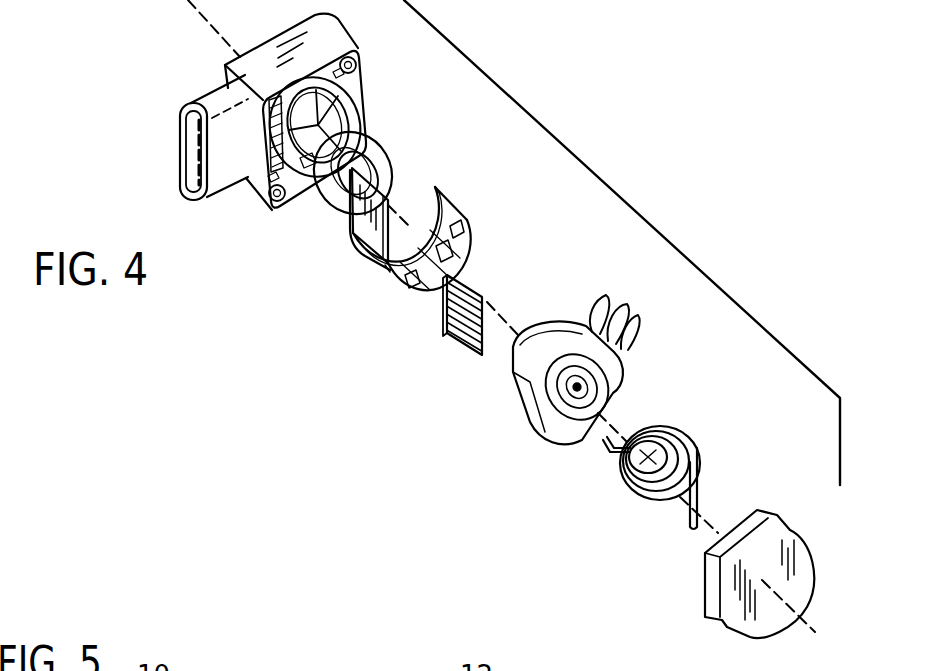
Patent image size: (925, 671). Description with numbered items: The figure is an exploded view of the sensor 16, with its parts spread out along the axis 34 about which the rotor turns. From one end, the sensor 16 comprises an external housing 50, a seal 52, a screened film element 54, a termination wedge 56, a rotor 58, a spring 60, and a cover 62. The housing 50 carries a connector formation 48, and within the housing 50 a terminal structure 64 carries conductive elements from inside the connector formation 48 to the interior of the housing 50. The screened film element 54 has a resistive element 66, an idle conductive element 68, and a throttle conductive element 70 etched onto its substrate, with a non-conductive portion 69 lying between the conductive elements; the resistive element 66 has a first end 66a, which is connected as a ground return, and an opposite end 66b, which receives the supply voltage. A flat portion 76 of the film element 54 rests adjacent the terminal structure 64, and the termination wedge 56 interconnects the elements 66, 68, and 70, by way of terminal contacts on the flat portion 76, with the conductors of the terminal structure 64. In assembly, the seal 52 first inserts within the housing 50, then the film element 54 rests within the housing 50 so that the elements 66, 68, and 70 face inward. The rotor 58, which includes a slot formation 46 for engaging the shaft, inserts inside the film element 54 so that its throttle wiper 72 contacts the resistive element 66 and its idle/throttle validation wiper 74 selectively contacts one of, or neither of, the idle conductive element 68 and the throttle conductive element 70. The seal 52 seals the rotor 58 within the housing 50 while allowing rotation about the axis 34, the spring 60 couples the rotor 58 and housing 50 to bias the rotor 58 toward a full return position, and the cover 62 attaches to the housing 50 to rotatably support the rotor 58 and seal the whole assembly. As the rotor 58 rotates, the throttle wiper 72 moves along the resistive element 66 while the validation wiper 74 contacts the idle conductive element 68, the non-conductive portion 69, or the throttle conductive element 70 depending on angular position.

The sensor 16 is at (373, 373).
The axis 34 is at (212, 14).
The slot formation 46 is at (506, 374).
The connector formation 48 is at (188, 170).
The external housing 50 is at (233, 67).
The seal 52 is at (387, 157).
The screened film element 54 is at (357, 252).
The termination wedge 56 is at (445, 332).
The rotor 58 is at (570, 337).
The spring 60 is at (685, 445).
The cover 62 is at (758, 540).
The terminal structure 64 is at (333, 112).
The resistive element 66 is at (423, 217).
The end of resistive element 66a is at (383, 270).
The end of resistive element 66b is at (437, 190).
The idle conductive element 68 is at (460, 227).
The non-conductive portion 69 is at (457, 250).
The throttle conductive element 70 is at (413, 285).
The throttle wiper 72 is at (603, 293).
The idle/throttle validation wiper 74 is at (627, 310).
The flat portion 76 is at (350, 227).